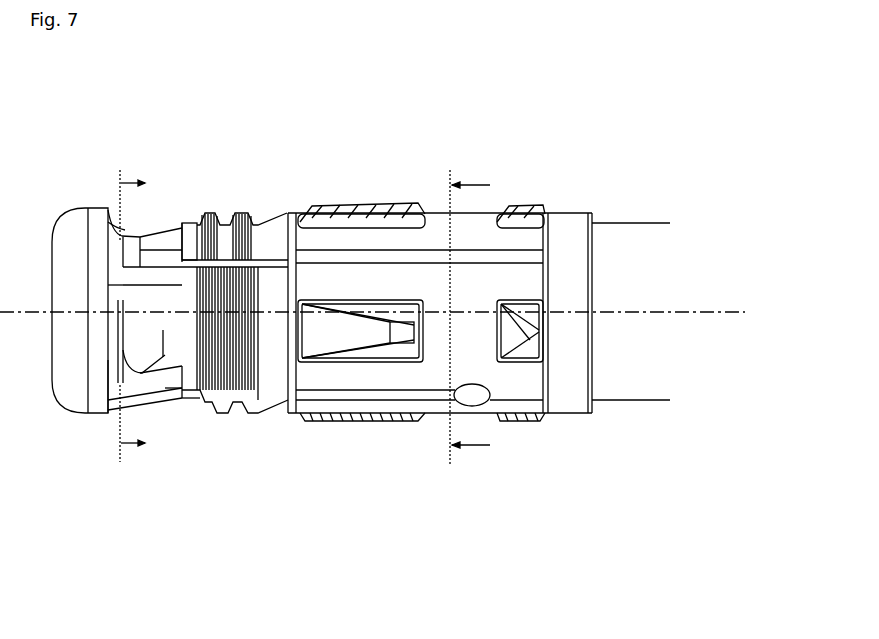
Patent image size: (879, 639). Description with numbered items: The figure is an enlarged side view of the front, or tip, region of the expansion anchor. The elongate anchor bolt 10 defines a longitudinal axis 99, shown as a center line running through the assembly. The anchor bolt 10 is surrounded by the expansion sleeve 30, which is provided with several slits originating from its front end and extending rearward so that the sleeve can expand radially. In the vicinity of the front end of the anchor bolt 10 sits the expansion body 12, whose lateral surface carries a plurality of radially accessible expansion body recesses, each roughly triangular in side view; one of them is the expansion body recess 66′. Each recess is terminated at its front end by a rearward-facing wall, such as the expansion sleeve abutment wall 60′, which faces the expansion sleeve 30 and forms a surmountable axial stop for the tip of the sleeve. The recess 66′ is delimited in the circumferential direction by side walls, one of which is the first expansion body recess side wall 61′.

The anchor bolt 10 is at (634, 290).
The expansion body 12 is at (125, 253).
The expansion sleeve 30 is at (432, 232).
The expansion sleeve abutment wall 60′ is at (130, 212).
The first expansion body recess side wall 61′ is at (140, 227).
The expansion body recess 66′ is at (158, 214).
The longitudinal axis 99 is at (685, 312).